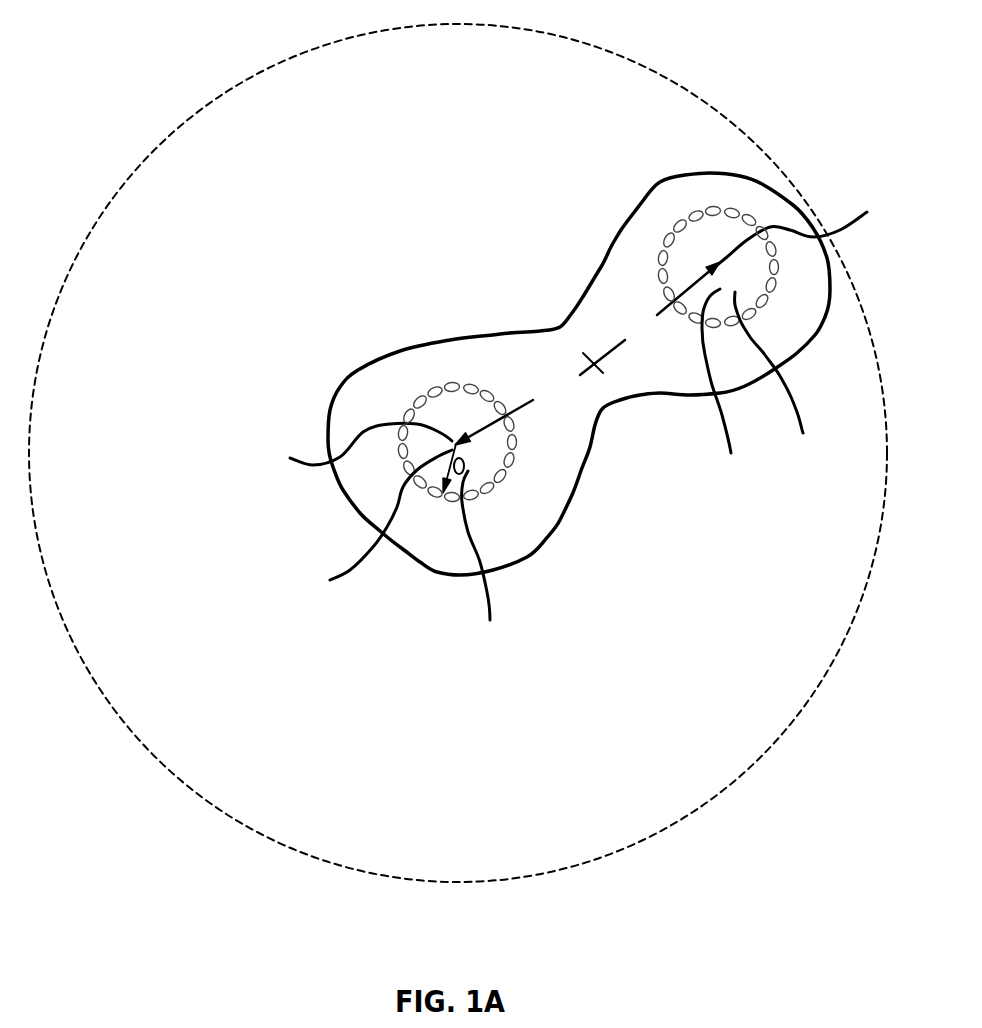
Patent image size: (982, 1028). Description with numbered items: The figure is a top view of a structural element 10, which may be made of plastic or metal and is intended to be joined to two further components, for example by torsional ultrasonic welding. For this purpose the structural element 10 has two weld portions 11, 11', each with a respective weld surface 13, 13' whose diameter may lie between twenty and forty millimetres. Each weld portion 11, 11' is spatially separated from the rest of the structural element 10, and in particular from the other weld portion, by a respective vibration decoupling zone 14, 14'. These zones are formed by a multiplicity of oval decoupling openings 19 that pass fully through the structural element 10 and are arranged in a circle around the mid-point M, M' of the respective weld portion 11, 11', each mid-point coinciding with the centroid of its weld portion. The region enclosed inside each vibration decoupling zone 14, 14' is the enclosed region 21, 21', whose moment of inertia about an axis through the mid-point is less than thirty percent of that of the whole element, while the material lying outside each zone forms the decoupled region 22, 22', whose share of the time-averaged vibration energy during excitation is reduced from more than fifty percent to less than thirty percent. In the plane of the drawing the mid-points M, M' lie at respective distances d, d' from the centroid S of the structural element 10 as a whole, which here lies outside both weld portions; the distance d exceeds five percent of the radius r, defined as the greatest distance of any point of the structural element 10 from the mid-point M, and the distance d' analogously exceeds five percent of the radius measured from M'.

The structural element 10 is at (645, 429).
The weld portion 11 is at (493, 569).
The weld portion 11' is at (786, 387).
The weld surface 13 is at (368, 538).
The weld surface 13' is at (737, 378).
The vibration decoupling zone 14 is at (555, 546).
The vibration decoupling zone 14' is at (646, 163).
The decoupling openings 19 is at (670, 237).
The enclosed region 21 is at (448, 388).
The enclosed region 21' is at (762, 236).
The decoupled region 22 is at (358, 356).
The decoupled region 22' is at (868, 320).
The mid-point M is at (357, 458).
The mid-point M' is at (816, 232).
The centroid S is at (591, 360).
The radius r is at (517, 26).
The distance d is at (540, 392).
The distance d' is at (676, 304).